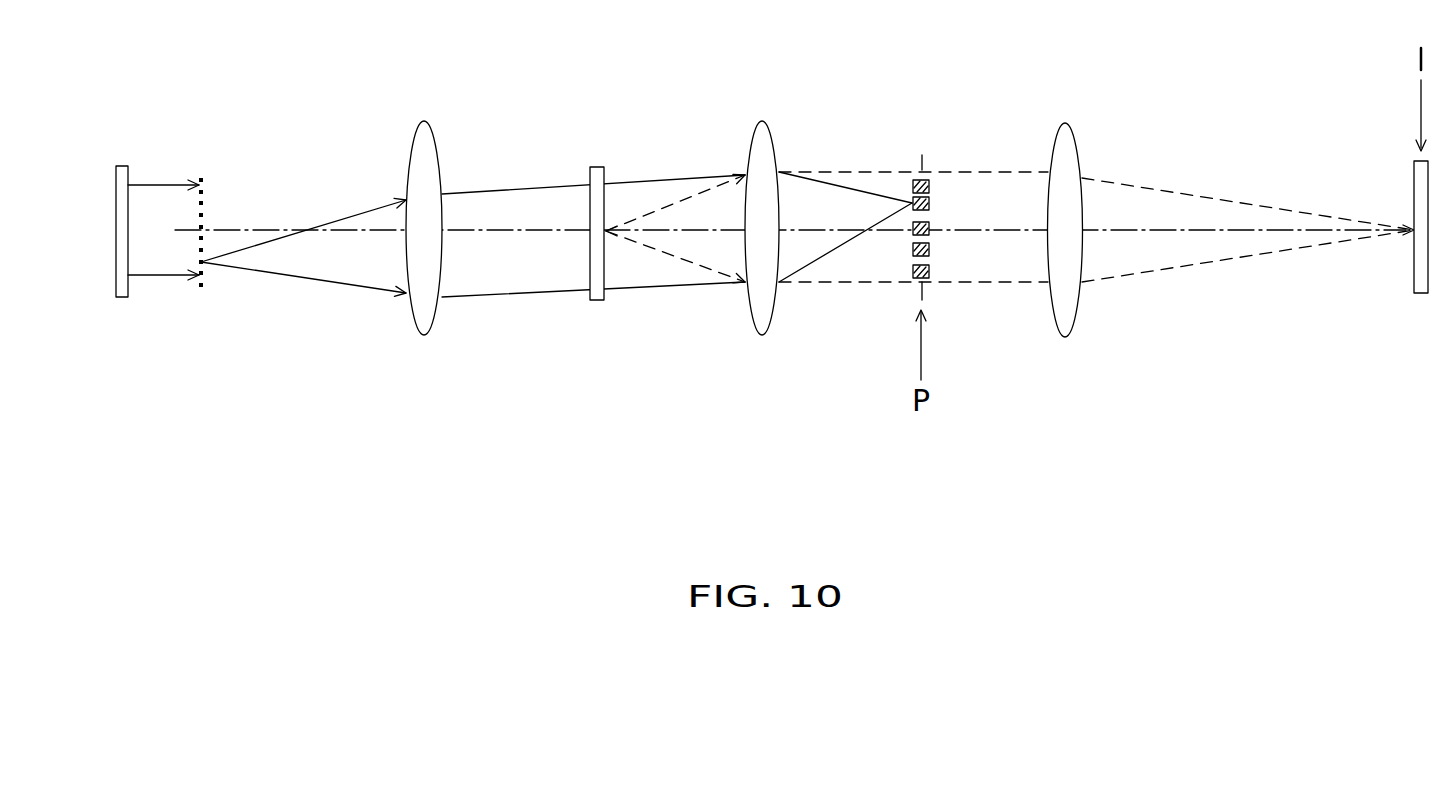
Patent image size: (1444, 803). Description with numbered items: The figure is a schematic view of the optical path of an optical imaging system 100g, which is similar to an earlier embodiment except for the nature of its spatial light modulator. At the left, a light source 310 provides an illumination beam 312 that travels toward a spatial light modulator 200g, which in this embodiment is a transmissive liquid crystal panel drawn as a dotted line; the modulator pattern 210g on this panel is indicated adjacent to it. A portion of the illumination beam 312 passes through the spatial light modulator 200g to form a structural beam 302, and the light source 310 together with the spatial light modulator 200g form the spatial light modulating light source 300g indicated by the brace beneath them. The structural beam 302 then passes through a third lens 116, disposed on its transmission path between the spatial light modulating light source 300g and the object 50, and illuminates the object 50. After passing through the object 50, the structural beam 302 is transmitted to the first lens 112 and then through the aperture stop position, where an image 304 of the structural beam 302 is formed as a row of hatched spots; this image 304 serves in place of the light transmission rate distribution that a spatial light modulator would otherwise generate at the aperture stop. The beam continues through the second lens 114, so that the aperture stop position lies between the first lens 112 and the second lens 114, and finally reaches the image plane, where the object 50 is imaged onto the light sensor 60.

The light source 310 is at (122, 297).
The illumination beam 312 is at (167, 185).
The spatial light modulator / modulation pattern 210g is at (203, 190).
The spatial light modulator 200g is at (201, 295).
The illumination module 300g is at (127, 415).
The structural beam 302 is at (340, 285).
The third lens 116 is at (424, 315).
The object 50 is at (595, 300).
The first lens 112 is at (762, 315).
The image 304 is at (905, 253).
The second lens 114 is at (1065, 317).
The light sensor 60 is at (1423, 293).
The optical imaging system 100g is at (1343, 458).